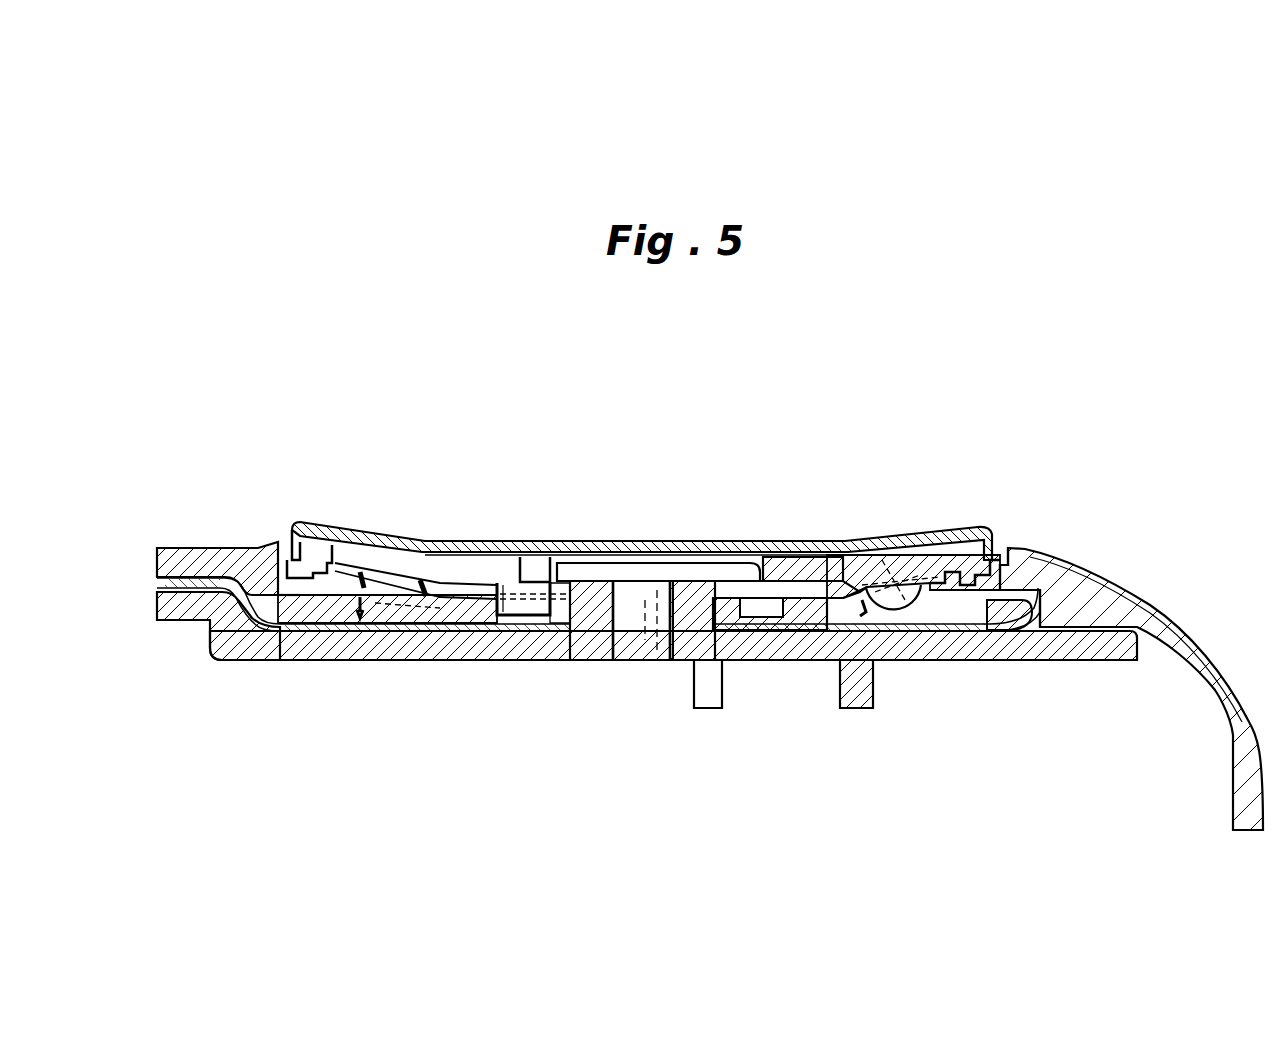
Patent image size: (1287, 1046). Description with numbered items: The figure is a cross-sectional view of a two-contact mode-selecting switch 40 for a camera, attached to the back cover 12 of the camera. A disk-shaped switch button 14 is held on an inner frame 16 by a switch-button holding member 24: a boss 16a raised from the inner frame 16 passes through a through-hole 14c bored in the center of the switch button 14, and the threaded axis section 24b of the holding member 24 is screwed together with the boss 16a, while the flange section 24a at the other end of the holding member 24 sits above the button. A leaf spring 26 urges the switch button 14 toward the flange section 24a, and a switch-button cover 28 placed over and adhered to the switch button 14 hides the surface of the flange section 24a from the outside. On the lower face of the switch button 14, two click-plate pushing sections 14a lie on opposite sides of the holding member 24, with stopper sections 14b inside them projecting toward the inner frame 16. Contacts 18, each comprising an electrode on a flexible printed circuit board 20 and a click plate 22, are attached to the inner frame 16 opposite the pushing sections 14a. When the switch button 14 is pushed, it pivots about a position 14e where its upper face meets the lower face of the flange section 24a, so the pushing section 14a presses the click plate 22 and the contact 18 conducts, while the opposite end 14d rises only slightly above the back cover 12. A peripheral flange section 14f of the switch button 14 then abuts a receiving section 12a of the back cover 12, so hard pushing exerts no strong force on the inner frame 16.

The back cover 12 is at (212, 548).
The receiving section 12a is at (1040, 585).
The switch button 14 is at (505, 545).
The click-plate pushing section 14a is at (425, 658).
The stopper section 14b is at (533, 662).
The through-hole 14c is at (545, 575).
The end 14d is at (290, 528).
The position 14e is at (512, 552).
The flange section 14f is at (1000, 575).
The inner frame 16 is at (1078, 670).
The boss 16a is at (697, 595).
The contact 18 is at (332, 548).
The flexible printed circuit board 20 is at (380, 660).
The click plate 22 is at (465, 552).
The switch-button holding member 24 is at (658, 607).
The flange section 24a is at (600, 563).
The axis section 24b is at (637, 662).
The leaf spring 26 is at (386, 552).
The switch-button cover 28 is at (425, 552).
The mode-selecting switch 40 is at (645, 458).